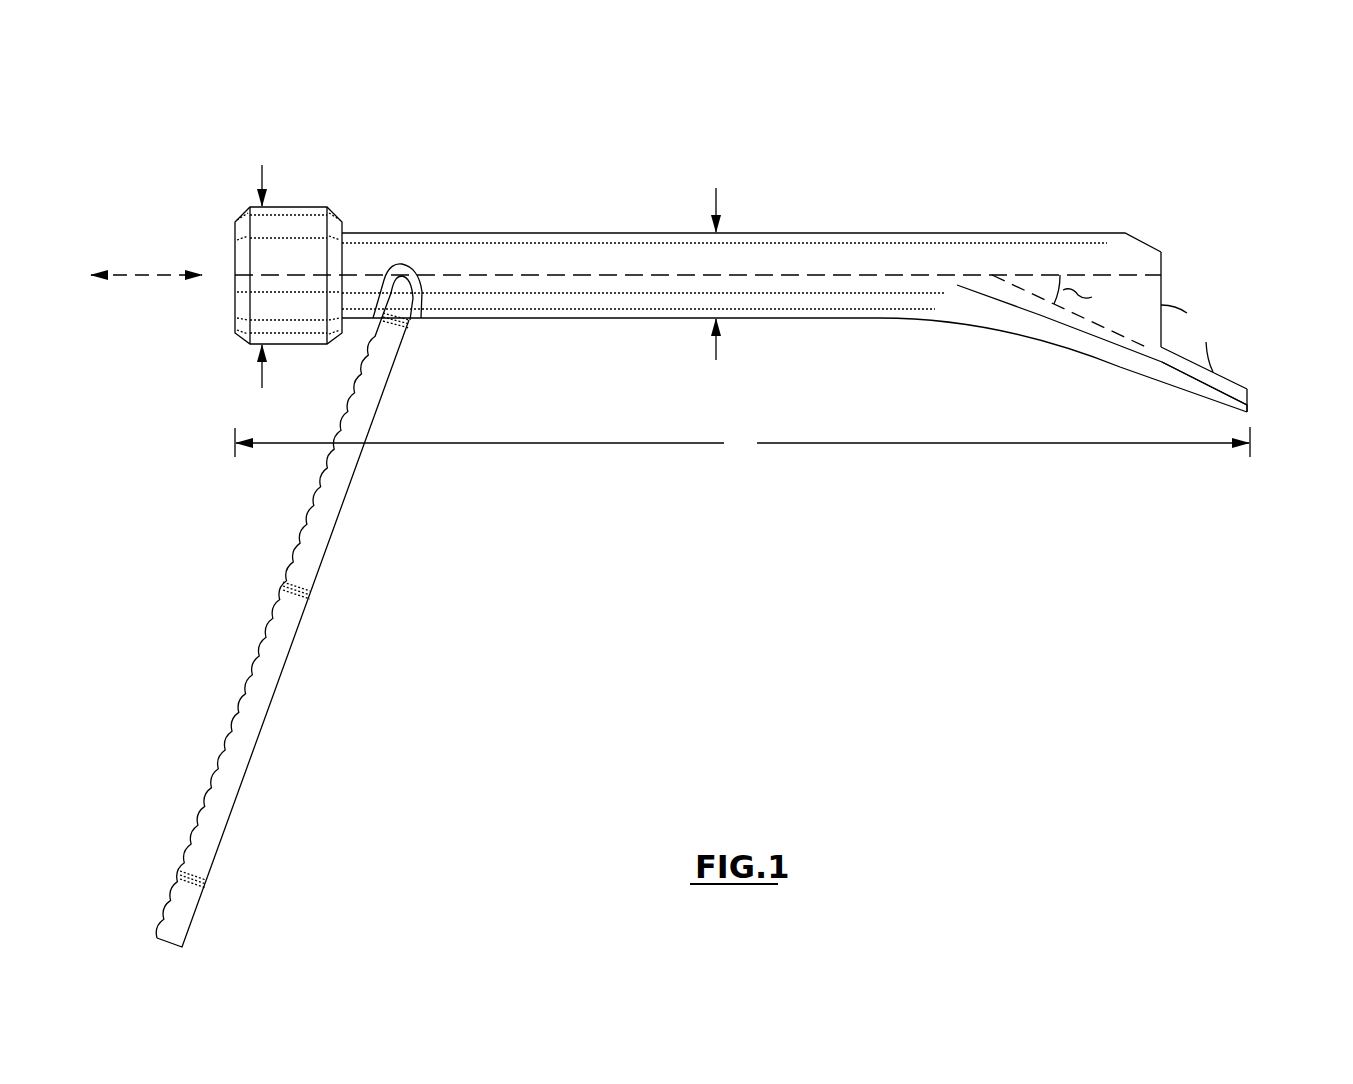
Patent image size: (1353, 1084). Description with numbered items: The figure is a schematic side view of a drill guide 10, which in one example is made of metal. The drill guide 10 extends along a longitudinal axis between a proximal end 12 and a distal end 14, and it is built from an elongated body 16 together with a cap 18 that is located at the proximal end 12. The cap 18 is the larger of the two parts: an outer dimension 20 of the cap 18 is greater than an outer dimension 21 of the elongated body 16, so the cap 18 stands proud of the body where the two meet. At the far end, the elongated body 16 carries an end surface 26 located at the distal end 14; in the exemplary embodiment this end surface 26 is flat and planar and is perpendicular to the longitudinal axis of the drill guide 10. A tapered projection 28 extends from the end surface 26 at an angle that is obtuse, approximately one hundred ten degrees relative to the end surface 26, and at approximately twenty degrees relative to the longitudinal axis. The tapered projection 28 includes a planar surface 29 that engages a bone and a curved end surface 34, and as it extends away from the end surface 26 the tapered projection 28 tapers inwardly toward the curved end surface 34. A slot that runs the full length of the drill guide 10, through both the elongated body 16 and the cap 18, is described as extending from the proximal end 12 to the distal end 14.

The drill guide 10 is at (1044, 105).
The proximal end 12 is at (192, 216).
The distal end 14 is at (1262, 220).
The elongated body 16 is at (503, 256).
The cap 18 is at (290, 232).
The outer dimension of the cap 20 is at (262, 170).
The outer dimension of the elongated body 21 is at (716, 195).
The end surface 26 is at (1165, 310).
The tapered projection 28 is at (1242, 390).
The planar surface 29 is at (1222, 372).
The curved end surface 34 is at (1250, 397).